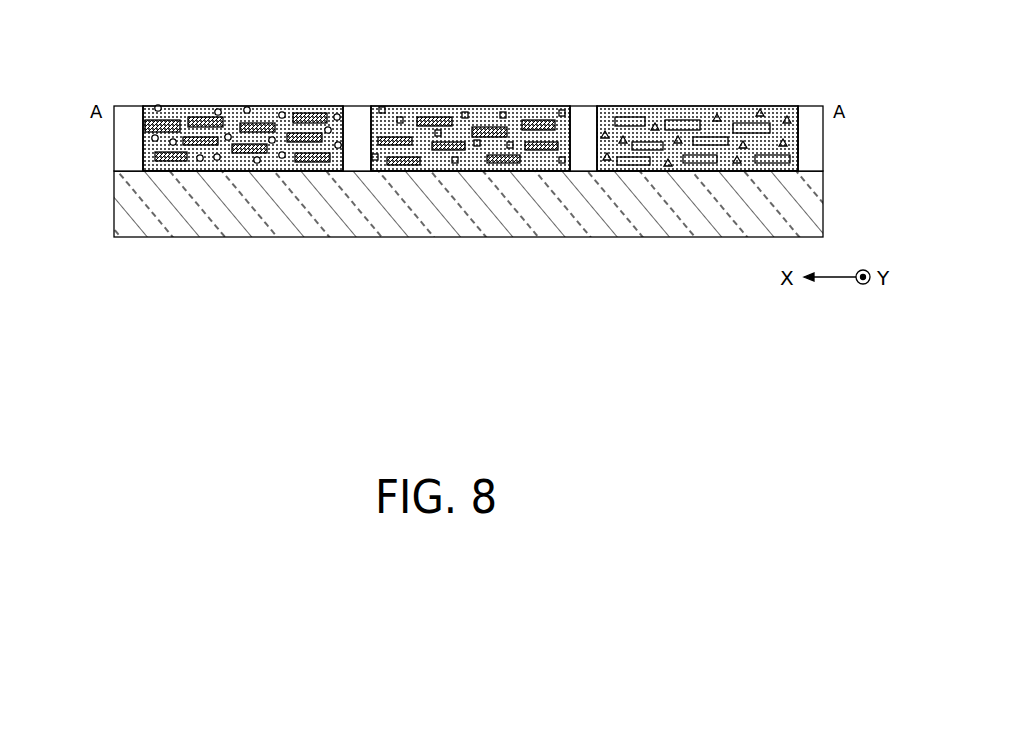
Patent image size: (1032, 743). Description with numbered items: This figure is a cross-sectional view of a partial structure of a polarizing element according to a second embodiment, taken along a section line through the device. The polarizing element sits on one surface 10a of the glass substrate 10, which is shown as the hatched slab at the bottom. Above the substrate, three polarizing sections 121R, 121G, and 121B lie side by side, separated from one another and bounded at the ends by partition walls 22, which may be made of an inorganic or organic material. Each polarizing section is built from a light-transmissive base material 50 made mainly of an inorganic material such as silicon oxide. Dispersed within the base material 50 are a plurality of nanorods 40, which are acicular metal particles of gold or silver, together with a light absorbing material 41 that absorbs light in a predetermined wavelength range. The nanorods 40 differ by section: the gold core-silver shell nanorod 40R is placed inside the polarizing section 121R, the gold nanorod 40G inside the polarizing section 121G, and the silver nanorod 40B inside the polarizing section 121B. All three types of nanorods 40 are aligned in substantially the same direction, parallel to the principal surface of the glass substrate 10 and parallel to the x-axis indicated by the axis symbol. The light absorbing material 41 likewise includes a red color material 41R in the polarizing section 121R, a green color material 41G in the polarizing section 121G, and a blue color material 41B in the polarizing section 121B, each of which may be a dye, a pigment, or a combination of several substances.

The glass substrate 10 is at (820, 205).
The one surface of the glass substrate 10a is at (117, 170).
The partition wall 22 is at (130, 110).
The nanorods 40 is at (464, 88).
The gold core-silver shell nanorod 40R is at (460, 88).
The gold nanorod 40G is at (434, 112).
The silver nanorod 40B is at (633, 112).
The light absorbing material 41 is at (460, 85).
The red color material 41R is at (158, 105).
The green color material 41G is at (383, 107).
The blue color material 41B is at (717, 113).
The light-transmissive base material 50 is at (290, 108).
The polarizing section 121R is at (273, 106).
The polarizing section 121G is at (505, 106).
The polarizing section 121B is at (745, 106).